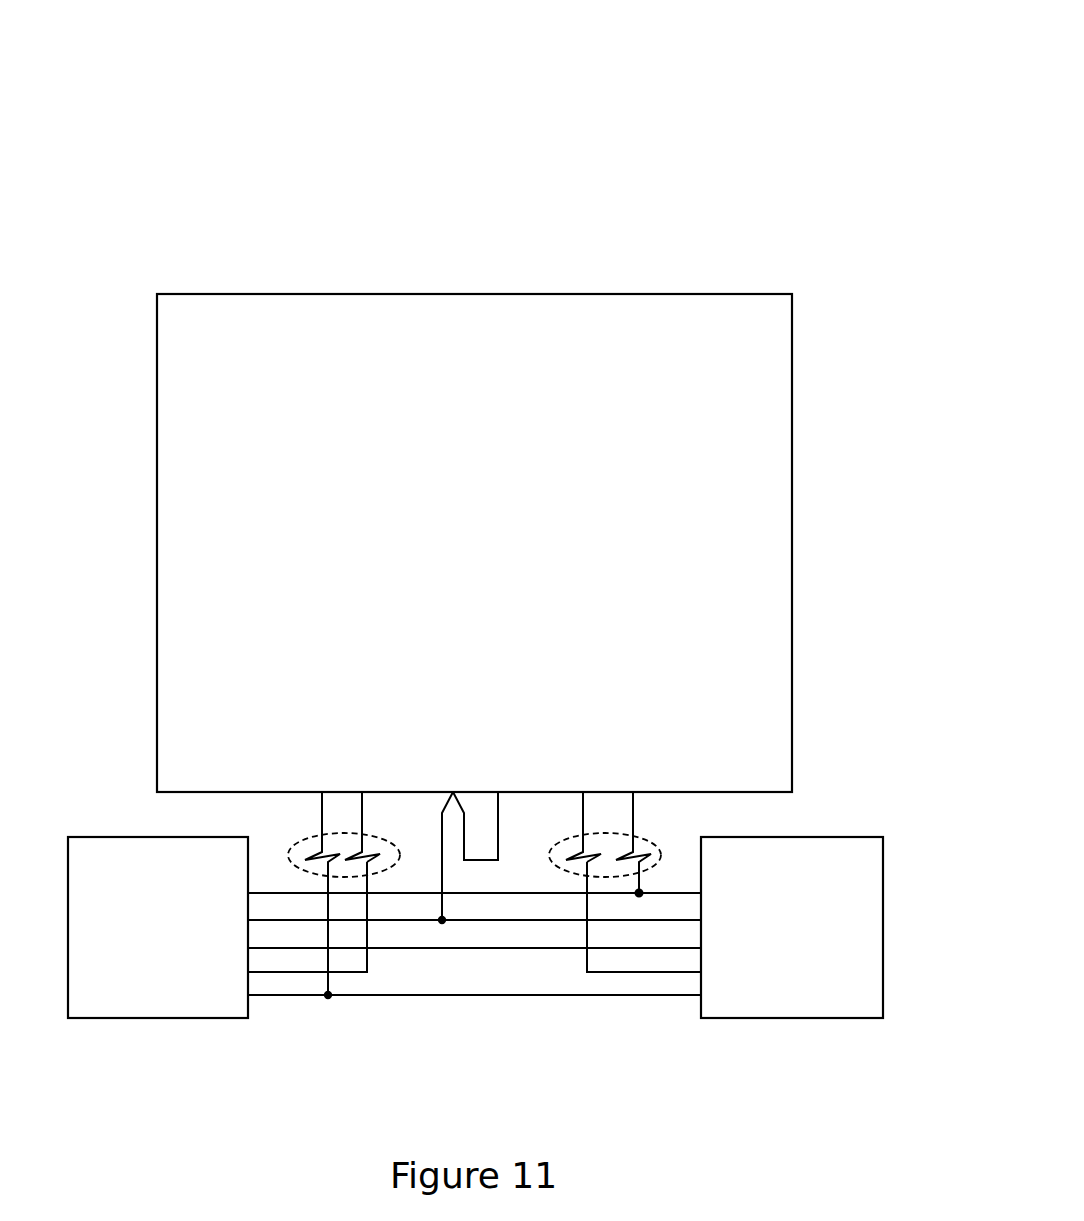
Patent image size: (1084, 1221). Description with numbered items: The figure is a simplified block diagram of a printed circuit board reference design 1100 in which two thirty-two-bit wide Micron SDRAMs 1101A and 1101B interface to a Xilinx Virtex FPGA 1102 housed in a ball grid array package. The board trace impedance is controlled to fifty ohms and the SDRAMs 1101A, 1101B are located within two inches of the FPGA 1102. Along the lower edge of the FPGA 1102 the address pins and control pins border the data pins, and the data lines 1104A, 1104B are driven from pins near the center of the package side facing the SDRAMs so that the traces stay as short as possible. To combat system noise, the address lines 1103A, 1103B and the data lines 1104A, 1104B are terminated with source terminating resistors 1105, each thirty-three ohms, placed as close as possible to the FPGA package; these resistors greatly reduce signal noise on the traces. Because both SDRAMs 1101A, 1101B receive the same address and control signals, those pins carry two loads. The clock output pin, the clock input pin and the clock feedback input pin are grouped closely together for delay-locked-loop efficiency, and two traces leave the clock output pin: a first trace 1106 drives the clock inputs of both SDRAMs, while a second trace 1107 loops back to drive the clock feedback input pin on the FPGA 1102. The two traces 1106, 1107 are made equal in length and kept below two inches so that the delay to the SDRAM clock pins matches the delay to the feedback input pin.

The printed circuit board reference design 1100 is at (559, 186).
The SDRAM 1101A is at (158, 927).
The SDRAM 1101B is at (792, 927).
The FPGA 1102 is at (474, 543).
The address line 1103A is at (270, 974).
The address line 1103B is at (680, 998).
The data line 1104A is at (363, 997).
The data line 1104B is at (612, 974).
The source terminating resistor 1105 is at (288, 862).
The first trace 1106 is at (440, 858).
The second trace 1107 is at (500, 840).